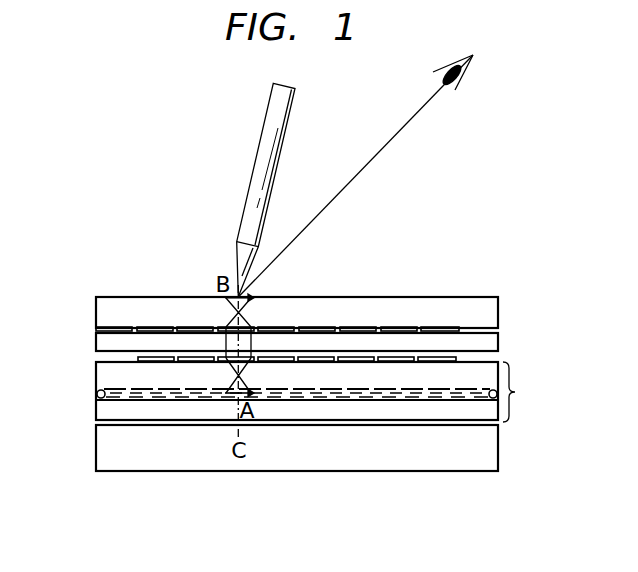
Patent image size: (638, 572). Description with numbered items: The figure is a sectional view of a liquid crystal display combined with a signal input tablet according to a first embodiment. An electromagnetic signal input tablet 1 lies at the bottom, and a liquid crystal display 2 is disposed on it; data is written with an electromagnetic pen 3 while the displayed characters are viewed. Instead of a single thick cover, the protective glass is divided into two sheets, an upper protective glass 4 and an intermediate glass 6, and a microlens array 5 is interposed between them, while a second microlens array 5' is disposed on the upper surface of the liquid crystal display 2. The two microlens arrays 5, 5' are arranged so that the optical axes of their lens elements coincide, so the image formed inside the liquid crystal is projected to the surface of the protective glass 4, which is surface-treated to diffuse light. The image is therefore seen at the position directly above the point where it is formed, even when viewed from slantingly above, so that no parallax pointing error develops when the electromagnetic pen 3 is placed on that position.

The electromagnetic signal input tablet 1 is at (500, 446).
The liquid crystal display 2 is at (516, 392).
The electromagnetic pen 3 is at (250, 157).
The protective glass 4 is at (500, 307).
The microlens array 5 is at (258, 316).
The microlens array 5' is at (256, 372).
The intermediate glass 6 is at (500, 341).